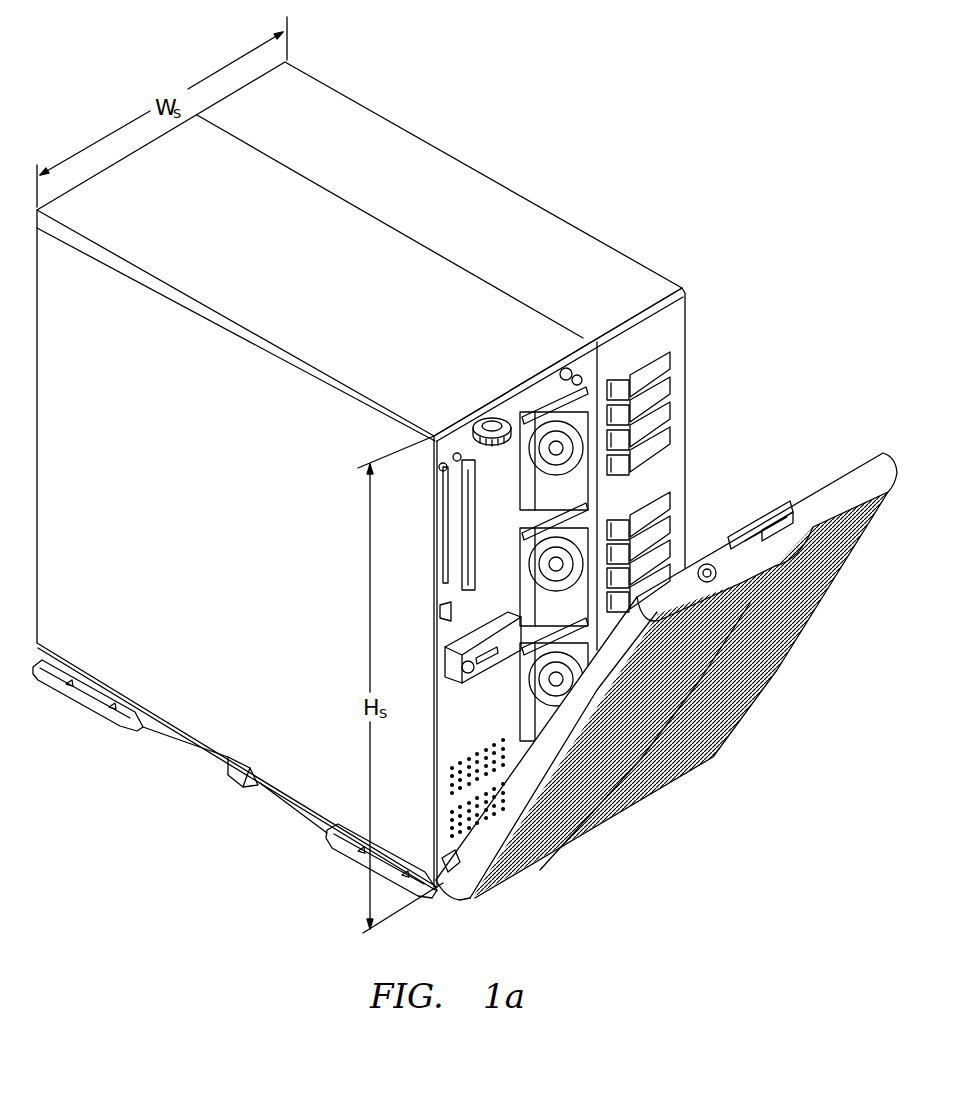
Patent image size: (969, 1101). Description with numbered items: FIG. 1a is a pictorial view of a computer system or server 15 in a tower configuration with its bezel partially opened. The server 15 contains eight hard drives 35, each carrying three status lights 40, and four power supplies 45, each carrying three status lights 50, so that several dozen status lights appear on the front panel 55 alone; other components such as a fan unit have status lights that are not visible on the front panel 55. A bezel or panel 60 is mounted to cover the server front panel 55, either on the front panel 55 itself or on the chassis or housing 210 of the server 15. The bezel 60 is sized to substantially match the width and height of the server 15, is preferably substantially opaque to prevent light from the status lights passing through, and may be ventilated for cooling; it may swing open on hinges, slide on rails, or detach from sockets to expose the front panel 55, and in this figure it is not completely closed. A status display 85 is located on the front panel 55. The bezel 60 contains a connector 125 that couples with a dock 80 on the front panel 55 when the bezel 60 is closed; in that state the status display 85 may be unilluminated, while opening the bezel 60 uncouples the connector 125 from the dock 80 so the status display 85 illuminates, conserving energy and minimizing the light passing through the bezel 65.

The server 15 is at (517, 179).
The hard drives 35 is at (672, 441).
The status lights 40 is at (612, 380).
The power supplies 45 is at (522, 608).
The status lights 50 is at (519, 549).
The front panel 55 is at (686, 304).
The bezel 60 is at (866, 468).
The bezel 65 is at (765, 650).
The dock 80 is at (440, 615).
The status display 85 is at (490, 658).
The connector 125 is at (543, 694).
The chassis 210 is at (222, 732).